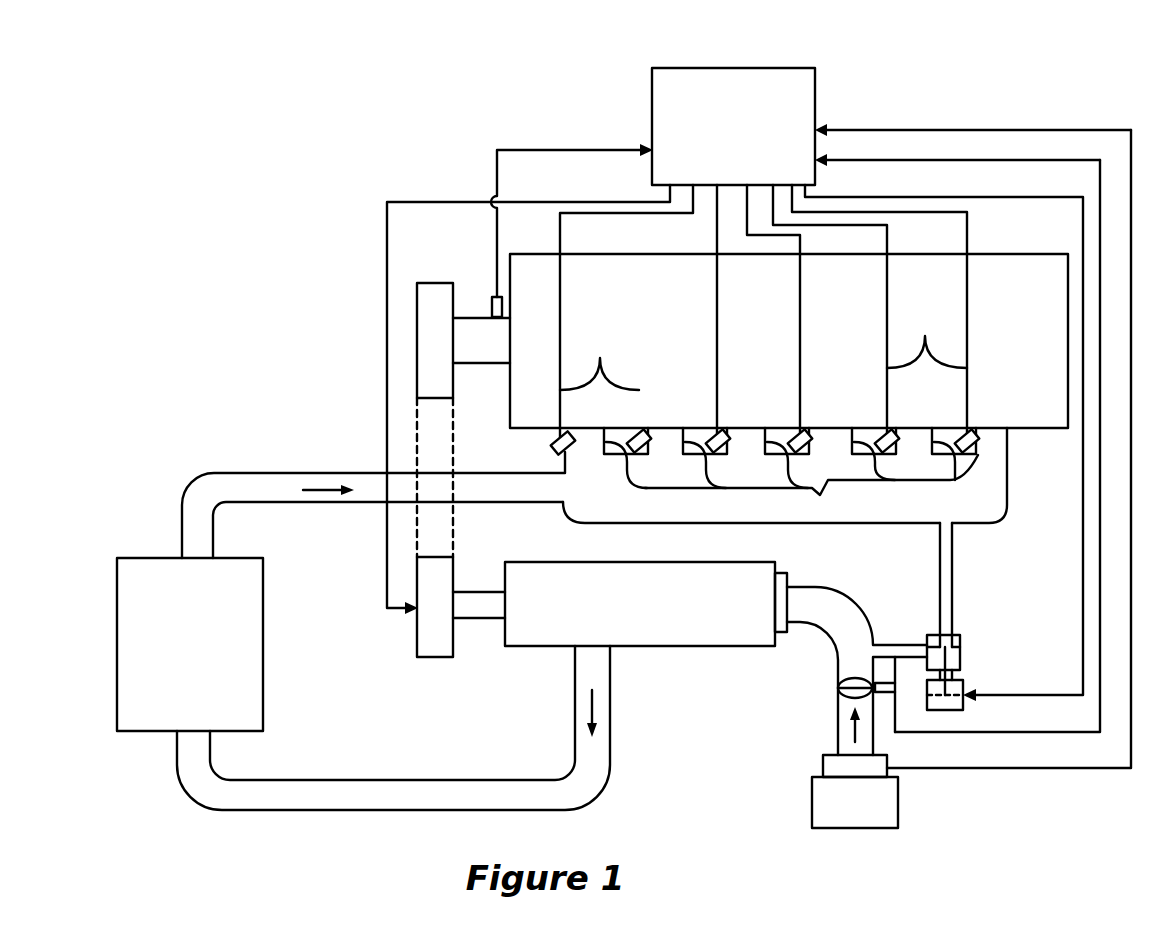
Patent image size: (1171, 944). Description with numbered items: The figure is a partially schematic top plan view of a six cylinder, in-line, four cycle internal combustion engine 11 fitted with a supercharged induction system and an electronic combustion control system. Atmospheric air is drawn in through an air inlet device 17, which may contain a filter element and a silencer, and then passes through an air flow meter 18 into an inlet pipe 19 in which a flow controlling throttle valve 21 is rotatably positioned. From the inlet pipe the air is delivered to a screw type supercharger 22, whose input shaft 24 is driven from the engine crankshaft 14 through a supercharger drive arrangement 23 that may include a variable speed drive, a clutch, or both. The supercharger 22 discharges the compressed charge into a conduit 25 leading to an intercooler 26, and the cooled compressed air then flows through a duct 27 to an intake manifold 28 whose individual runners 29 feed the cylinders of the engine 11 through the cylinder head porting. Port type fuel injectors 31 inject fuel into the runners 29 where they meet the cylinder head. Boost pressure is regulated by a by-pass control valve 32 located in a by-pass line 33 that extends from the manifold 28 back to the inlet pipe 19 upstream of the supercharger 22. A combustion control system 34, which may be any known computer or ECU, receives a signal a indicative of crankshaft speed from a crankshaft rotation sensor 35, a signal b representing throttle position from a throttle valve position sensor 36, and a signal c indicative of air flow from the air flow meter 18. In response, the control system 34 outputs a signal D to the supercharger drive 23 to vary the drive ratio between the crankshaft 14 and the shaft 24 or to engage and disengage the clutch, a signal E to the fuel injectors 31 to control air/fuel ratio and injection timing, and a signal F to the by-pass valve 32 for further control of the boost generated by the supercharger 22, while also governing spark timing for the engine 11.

The internal combustion engine 11 is at (992, 256).
The crankshaft 14 is at (477, 315).
The air inlet device 17 is at (852, 828).
The air flow meter 18 is at (823, 758).
The inlet pipe 19 is at (835, 628).
The throttle valve 21 is at (842, 692).
The supercharger 22 is at (630, 647).
The supercharger drive arrangement 23 is at (413, 440).
The input shaft 24 is at (478, 620).
The conduit 25 is at (395, 778).
The intercooler 26 is at (263, 680).
The duct 27 is at (293, 473).
The intake manifold 28 is at (858, 531).
The runners 29 is at (792, 483).
The fuel injectors 31 is at (990, 432).
The by-pass control valve 32 is at (965, 703).
The by-pass line 33 is at (958, 558).
The combustion control system 34 is at (817, 110).
The crankshaft rotation sensor 35 is at (503, 303).
The throttle valve position sensor 36 is at (885, 683).
The crankshaft speed signal a is at (593, 148).
The throttle position signal b is at (987, 768).
The air flow signal c is at (1053, 768).
The supercharger drive signal D is at (387, 277).
The fuel injector signal E is at (763, 350).
The by-pass valve signal F is at (1083, 580).